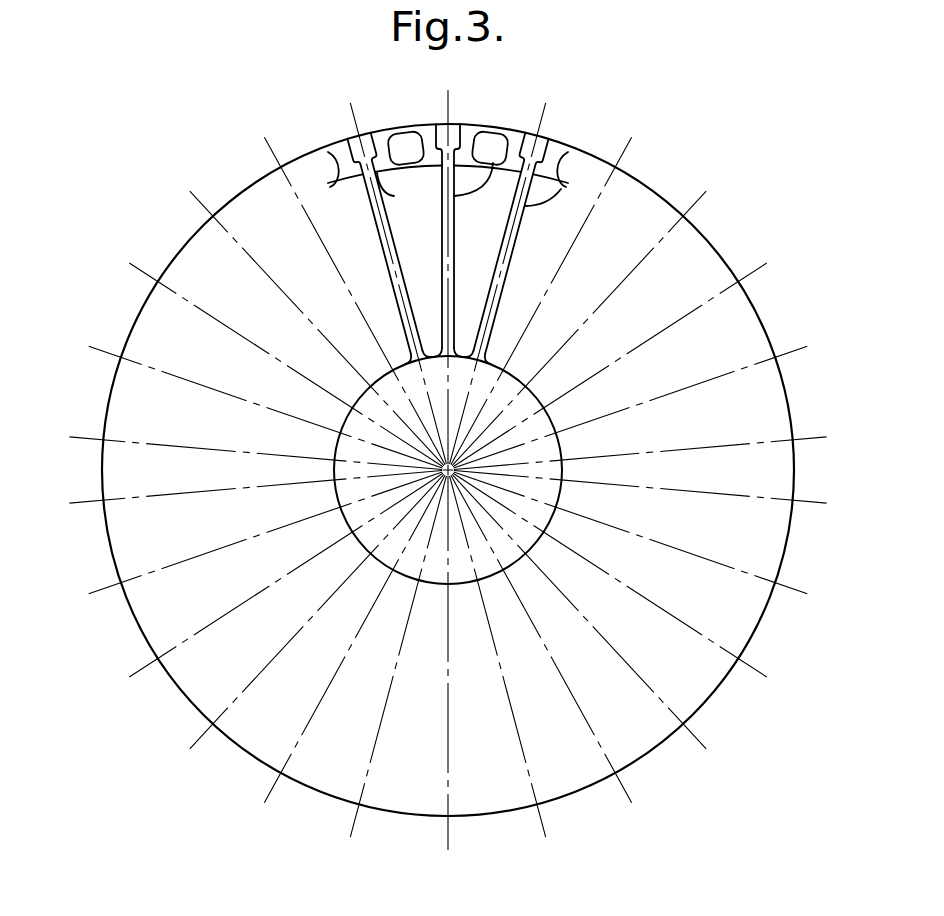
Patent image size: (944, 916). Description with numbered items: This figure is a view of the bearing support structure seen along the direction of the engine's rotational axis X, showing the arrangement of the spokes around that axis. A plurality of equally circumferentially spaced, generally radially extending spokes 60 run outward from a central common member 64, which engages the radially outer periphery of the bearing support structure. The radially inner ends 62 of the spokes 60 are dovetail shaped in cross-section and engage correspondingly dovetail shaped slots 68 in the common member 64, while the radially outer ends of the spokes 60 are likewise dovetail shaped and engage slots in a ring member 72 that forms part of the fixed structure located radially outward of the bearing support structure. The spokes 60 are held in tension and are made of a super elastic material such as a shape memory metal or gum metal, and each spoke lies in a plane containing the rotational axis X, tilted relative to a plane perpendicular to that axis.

The radially extending spokes 60 is at (395, 160).
The radially inner ends 62 is at (400, 351).
The common member 64 is at (485, 310).
The dovetail shaped slots 68 is at (396, 358).
The ring member 72 is at (328, 152).
The rotational axis X is at (449, 466).